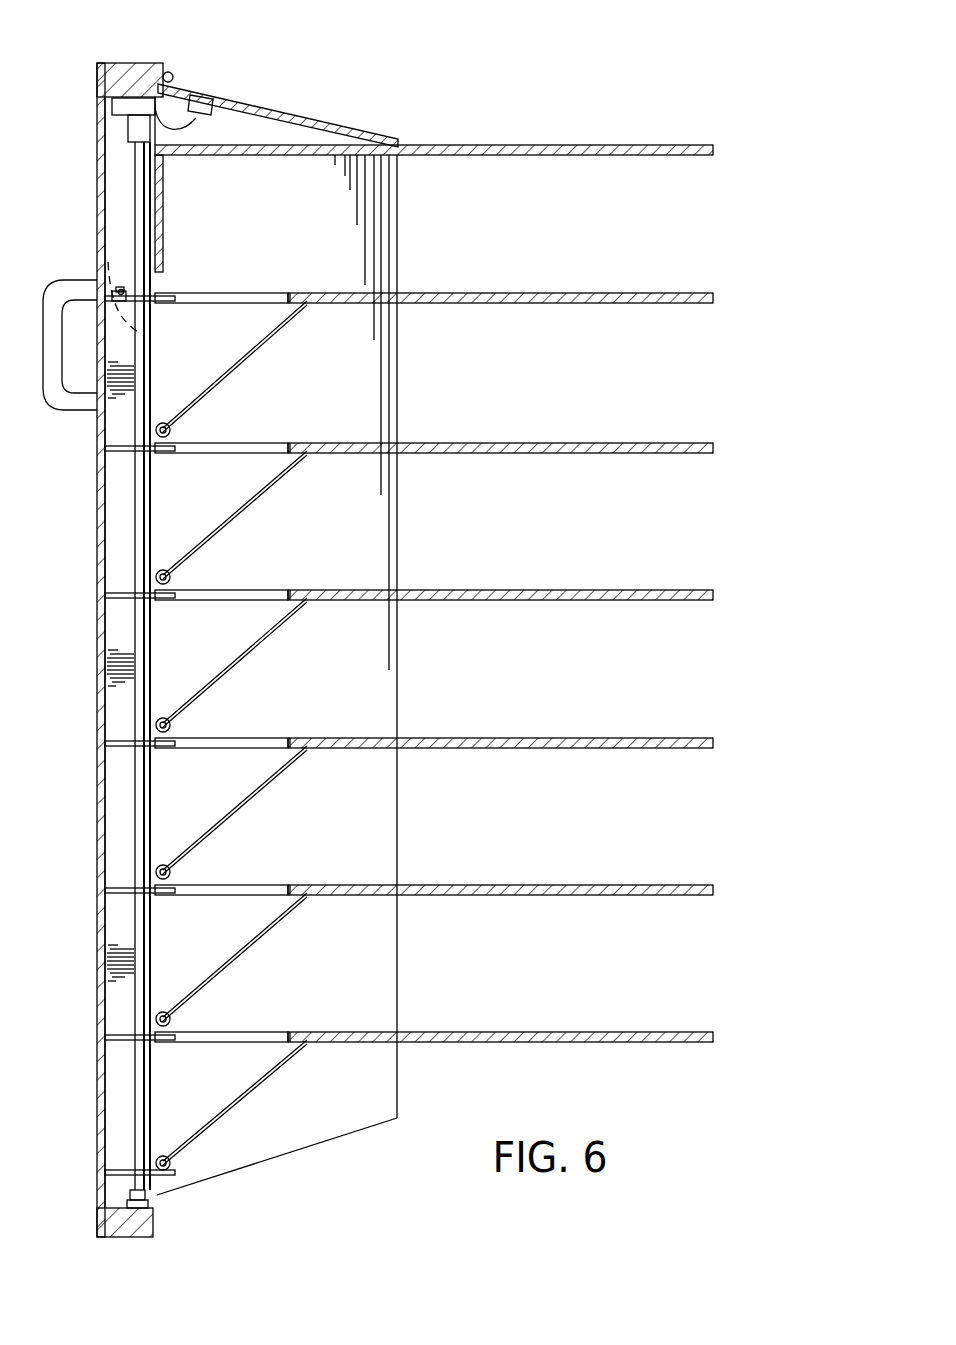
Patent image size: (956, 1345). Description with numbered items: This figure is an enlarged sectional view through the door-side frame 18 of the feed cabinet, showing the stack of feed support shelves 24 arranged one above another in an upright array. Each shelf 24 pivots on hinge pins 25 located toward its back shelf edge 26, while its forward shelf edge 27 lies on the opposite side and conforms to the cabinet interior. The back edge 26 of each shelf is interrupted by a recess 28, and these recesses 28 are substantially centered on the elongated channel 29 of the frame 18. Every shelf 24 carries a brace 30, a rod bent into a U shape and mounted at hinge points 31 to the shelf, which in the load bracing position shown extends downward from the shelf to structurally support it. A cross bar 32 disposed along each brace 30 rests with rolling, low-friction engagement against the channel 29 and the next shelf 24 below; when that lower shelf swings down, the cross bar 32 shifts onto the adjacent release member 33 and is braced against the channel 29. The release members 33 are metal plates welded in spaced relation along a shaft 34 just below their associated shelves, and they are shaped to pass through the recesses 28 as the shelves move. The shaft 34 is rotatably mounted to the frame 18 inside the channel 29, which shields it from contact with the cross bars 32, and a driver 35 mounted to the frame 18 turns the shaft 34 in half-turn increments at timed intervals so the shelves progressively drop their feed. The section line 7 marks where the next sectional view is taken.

The section line 7- 7 is at (120, 53).
The frame 18 is at (72, 1163).
The feed support shelf 24 is at (542, 668).
The hinge pin 25 is at (102, 262).
The back shelf edge 26 is at (147, 339).
The forward shelf edge 27 is at (721, 668).
The recess 28 is at (434, 639).
The elongated channel 29 is at (125, 562).
The brace 30 is at (247, 733).
The hinge point 31 is at (338, 693).
The cross bar 32 is at (204, 789).
The release member 33 is at (140, 757).
The shaft 34 is at (140, 211).
The driver 35 is at (138, 133).